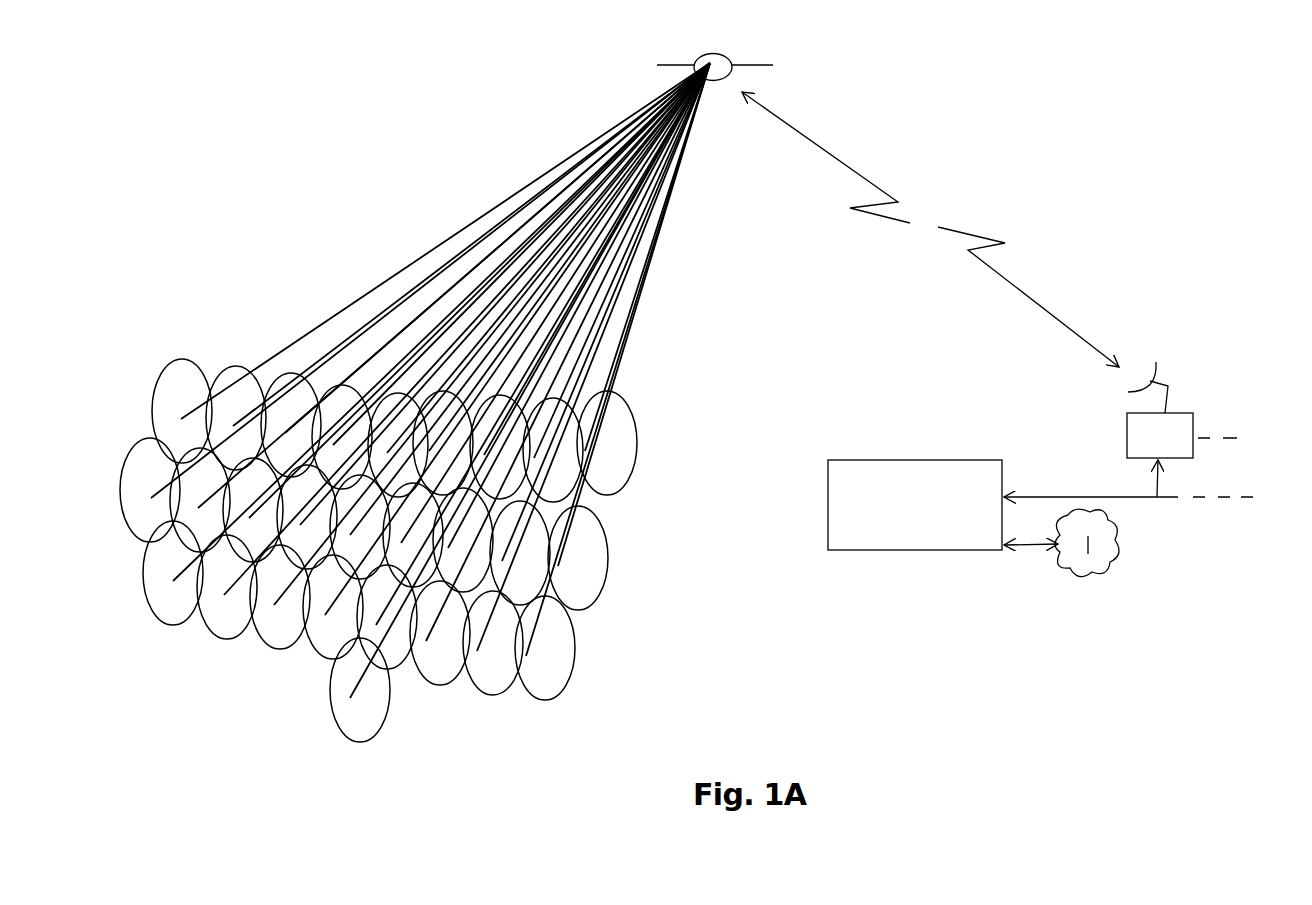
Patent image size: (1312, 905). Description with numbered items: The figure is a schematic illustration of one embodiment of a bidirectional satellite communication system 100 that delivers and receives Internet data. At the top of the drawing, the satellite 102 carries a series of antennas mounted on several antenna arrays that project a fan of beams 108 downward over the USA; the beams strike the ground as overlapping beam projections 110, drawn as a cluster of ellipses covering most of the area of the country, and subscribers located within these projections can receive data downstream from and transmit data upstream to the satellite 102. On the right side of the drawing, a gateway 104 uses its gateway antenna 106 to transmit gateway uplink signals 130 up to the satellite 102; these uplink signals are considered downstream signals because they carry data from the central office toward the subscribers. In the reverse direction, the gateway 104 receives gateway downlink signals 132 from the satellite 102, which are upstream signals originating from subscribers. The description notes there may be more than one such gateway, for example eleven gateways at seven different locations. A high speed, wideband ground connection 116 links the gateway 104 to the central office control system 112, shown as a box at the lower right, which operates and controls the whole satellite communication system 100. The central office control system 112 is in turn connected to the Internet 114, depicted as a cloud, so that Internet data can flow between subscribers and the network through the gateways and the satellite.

The satellite communication system 100 is at (1034, 48).
The satellite 102 is at (732, 60).
The gateway 104 is at (1127, 430).
The gateway antenna 106 is at (1153, 367).
The beams 108 is at (579, 132).
The beam projections 110 is at (258, 346).
The central office control system 112 is at (938, 552).
The Internet 114 is at (1113, 567).
The ground connection 116 is at (1038, 497).
The gateway uplink signals 130 is at (862, 176).
The gateway downlink signals 132 is at (1002, 273).